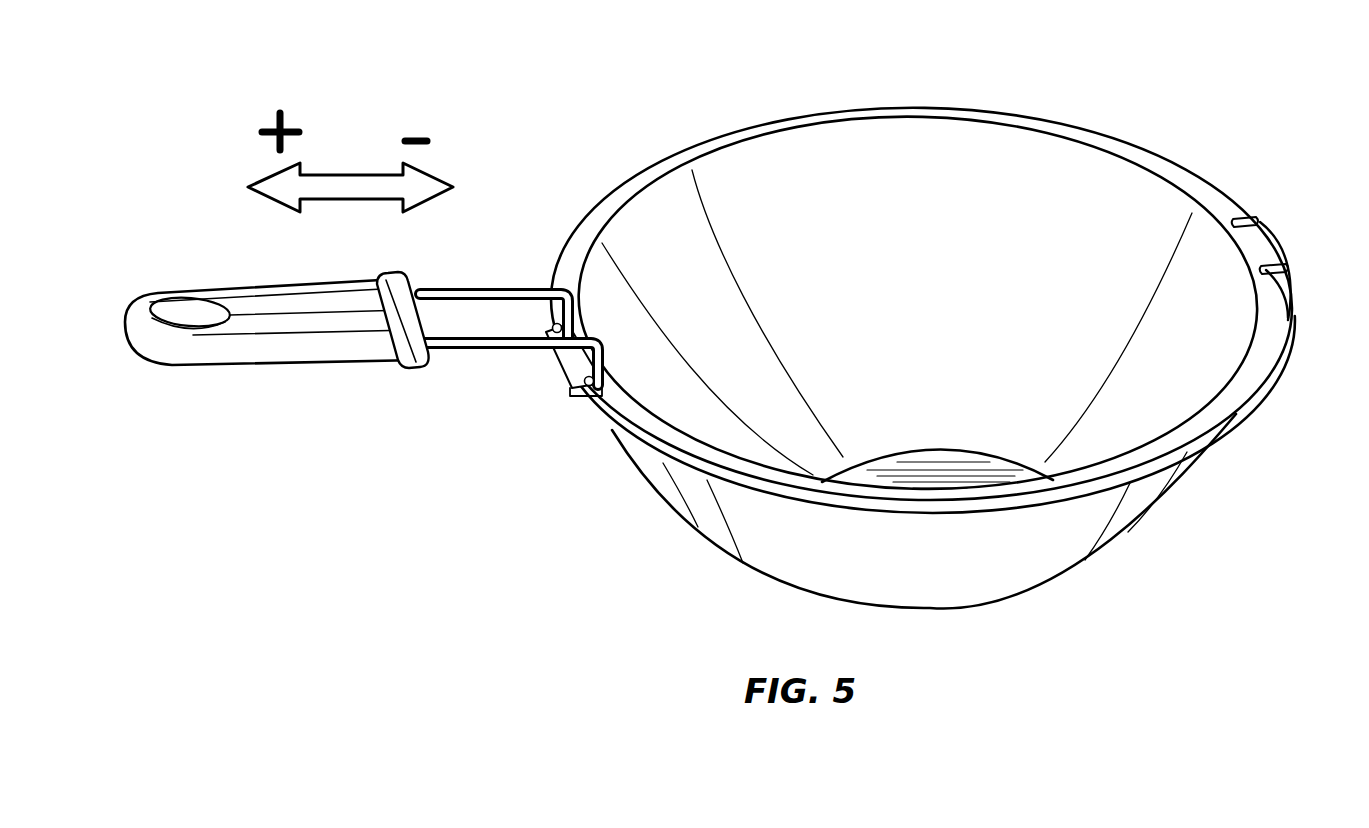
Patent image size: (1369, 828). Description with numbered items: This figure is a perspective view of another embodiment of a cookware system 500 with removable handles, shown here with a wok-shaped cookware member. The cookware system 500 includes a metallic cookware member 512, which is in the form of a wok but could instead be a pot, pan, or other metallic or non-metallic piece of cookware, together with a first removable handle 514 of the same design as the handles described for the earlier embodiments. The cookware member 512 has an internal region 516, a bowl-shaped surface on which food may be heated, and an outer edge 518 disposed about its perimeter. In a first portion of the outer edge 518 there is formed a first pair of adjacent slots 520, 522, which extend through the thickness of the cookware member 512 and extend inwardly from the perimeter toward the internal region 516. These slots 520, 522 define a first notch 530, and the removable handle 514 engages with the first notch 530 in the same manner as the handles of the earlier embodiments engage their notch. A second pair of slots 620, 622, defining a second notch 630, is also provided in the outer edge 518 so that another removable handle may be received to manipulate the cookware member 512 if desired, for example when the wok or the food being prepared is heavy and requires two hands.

The cookware system 500 is at (628, 142).
The cookware member 512 is at (663, 530).
The first removable handle 514 is at (245, 372).
The internal region 516 is at (889, 390).
The outer edge 518 is at (1078, 135).
The slot 520 is at (457, 347).
The slot 522 is at (577, 397).
The first notch 530 is at (596, 323).
The slot 620 is at (1237, 222).
The slot 622 is at (1290, 318).
The second notch 630 is at (1270, 247).